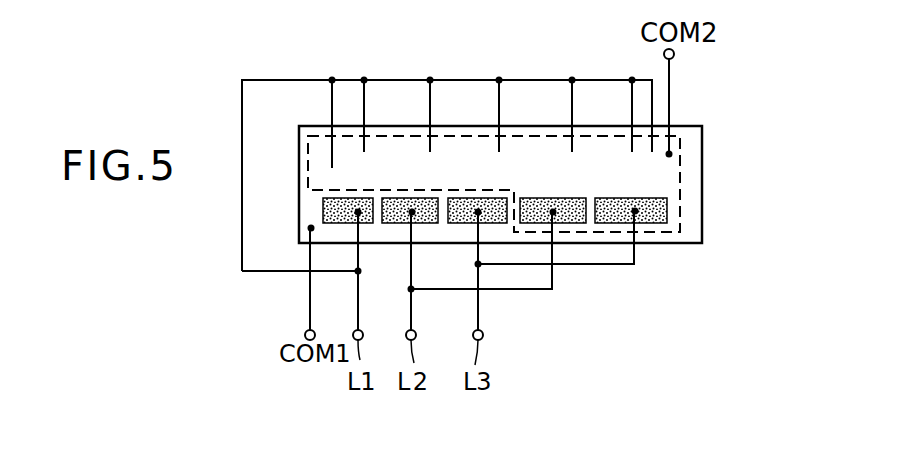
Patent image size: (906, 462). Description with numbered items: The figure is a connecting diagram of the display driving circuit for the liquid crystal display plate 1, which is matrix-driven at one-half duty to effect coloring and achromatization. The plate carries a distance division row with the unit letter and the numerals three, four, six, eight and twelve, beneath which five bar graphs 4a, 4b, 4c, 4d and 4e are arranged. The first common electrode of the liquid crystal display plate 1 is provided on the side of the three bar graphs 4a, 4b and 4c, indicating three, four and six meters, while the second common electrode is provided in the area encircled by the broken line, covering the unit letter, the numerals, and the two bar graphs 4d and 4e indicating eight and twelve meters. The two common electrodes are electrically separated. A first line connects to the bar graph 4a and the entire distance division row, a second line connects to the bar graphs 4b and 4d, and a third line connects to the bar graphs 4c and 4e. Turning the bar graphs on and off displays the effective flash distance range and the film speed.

The liquid crystal display plate 1 is at (690, 158).
The bar graph 4a is at (367, 222).
The bar graph 4b is at (427, 222).
The bar graph 4c is at (495, 222).
The bar graph 4d is at (570, 222).
The bar graph 4e is at (650, 222).